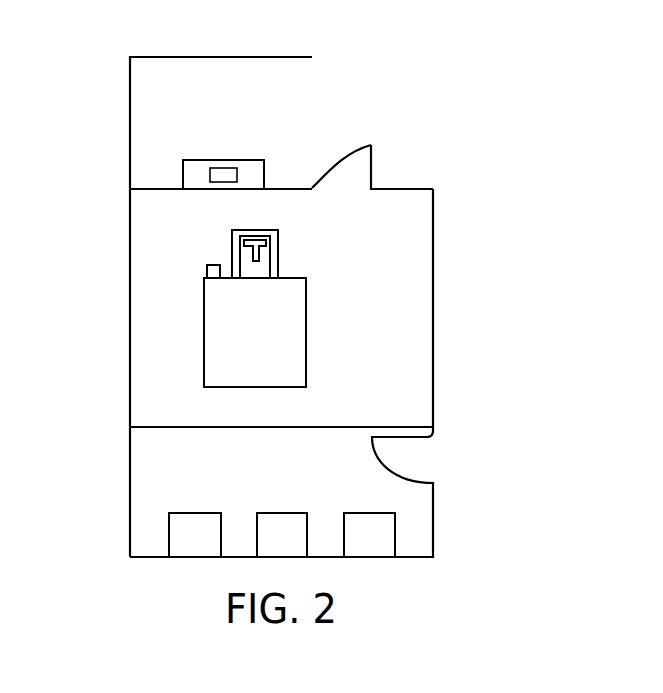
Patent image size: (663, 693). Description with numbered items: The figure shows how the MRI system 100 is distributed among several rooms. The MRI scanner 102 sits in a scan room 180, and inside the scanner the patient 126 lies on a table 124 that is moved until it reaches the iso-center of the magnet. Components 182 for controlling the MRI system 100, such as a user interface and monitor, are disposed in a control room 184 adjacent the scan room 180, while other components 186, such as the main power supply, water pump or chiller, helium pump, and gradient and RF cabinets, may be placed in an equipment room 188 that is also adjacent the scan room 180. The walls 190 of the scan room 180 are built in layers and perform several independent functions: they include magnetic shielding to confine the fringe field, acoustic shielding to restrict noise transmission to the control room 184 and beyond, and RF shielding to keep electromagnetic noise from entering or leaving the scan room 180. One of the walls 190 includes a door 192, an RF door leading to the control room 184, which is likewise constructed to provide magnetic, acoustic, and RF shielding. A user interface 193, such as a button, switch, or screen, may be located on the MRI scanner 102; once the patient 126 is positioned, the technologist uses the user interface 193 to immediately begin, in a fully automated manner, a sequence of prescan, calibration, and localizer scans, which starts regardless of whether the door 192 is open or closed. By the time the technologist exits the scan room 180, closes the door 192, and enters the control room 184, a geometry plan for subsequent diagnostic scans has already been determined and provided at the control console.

The MRI system 100 is at (221, 292).
The MRI scanner 102 is at (306, 325).
The table 124 is at (278, 233).
The patient 126 is at (262, 270).
The scan room 180 is at (390, 390).
The components for controlling the MRI system 182 is at (222, 157).
The control room 184 is at (164, 108).
The other components 186 is at (270, 503).
The equipment room 188 is at (167, 492).
The walls 190 is at (397, 192).
The door 192 is at (372, 158).
The user interface 193 is at (213, 263).